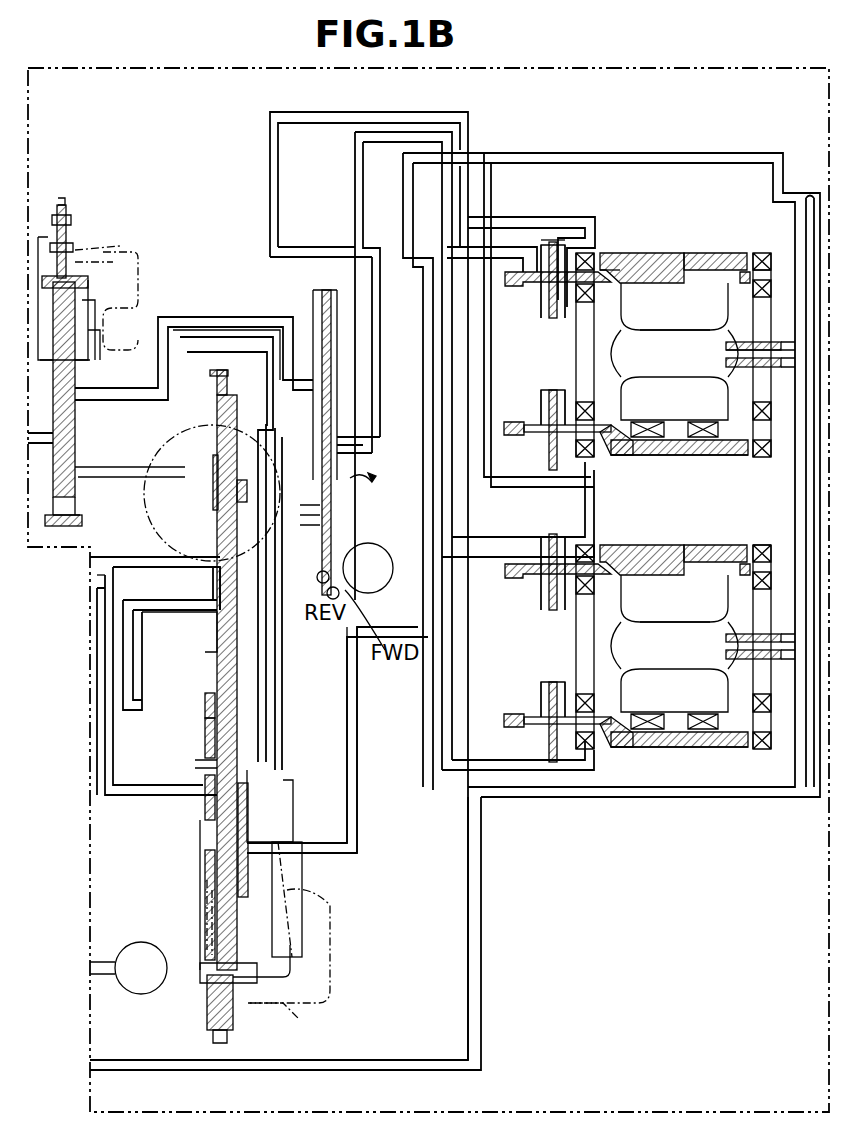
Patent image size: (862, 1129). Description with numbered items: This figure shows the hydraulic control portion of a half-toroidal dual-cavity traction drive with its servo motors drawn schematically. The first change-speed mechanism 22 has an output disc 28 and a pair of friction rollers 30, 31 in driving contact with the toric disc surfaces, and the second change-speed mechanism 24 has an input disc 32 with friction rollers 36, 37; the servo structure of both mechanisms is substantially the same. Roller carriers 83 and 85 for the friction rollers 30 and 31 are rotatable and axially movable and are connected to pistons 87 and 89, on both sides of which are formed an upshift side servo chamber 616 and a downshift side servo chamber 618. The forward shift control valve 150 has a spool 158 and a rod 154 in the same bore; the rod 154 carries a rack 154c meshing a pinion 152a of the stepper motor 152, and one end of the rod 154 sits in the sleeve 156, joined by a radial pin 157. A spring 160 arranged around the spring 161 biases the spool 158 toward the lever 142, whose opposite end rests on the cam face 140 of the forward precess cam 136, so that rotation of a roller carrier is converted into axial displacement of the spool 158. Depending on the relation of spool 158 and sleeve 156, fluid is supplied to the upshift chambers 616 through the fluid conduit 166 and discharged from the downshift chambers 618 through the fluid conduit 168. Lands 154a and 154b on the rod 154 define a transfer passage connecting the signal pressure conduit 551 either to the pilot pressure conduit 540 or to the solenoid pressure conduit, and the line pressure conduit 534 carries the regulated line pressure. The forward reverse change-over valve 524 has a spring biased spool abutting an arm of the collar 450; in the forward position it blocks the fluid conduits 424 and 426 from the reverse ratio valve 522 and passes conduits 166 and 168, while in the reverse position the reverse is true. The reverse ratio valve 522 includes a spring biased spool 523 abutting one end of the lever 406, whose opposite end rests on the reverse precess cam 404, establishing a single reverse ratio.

The first change-speed mechanism 22 is at (720, 240).
The second change-speed mechanism 24 is at (755, 540).
The output disc 28 is at (742, 270).
The friction roller 30 is at (680, 300).
The friction roller 31 is at (740, 405).
The input disc 32 is at (720, 590).
The friction roller 36 is at (128, 945).
The friction roller 37 is at (690, 747).
The roller carrier 83 is at (620, 260).
The roller carrier 85 is at (700, 455).
The piston 87 is at (557, 245).
The piston 89 is at (565, 465).
The forward precess cam 136 is at (302, 865).
The cam face 140 is at (302, 893).
The lever 142 is at (283, 1005).
The forward shift control valve 150 is at (200, 859).
The stepper motor 152 is at (165, 490).
The pinion 152a is at (185, 466).
The rod 154 is at (240, 662).
The land 154a is at (238, 655).
The land 154b is at (320, 583).
The rack 154c is at (200, 440).
The sleeve 156 is at (205, 735).
The radial pin 157 is at (205, 700).
The spool 158 is at (205, 836).
The spring 160 is at (205, 910).
The spring 161 is at (205, 923).
The fluid conduit 166 is at (283, 812).
The fluid conduit 168 is at (348, 788).
The reverse precess cam 404 is at (103, 300).
The lever 406 is at (148, 300).
The fluid conduit 424 is at (228, 360).
The fluid conduit 426 is at (253, 330).
The collar 450 is at (368, 543).
The reverse ratio valve 522 is at (88, 452).
The spool 523 is at (85, 505).
The forward reverse change-over valve 524 is at (372, 490).
The line pressure conduit 534 is at (148, 805).
The pilot pressure conduit 540 is at (148, 685).
The signal pressure conduit 551 is at (145, 580).
The upshift side servo chamber 616 is at (565, 320).
The downshift side servo chamber 618 is at (541, 310).